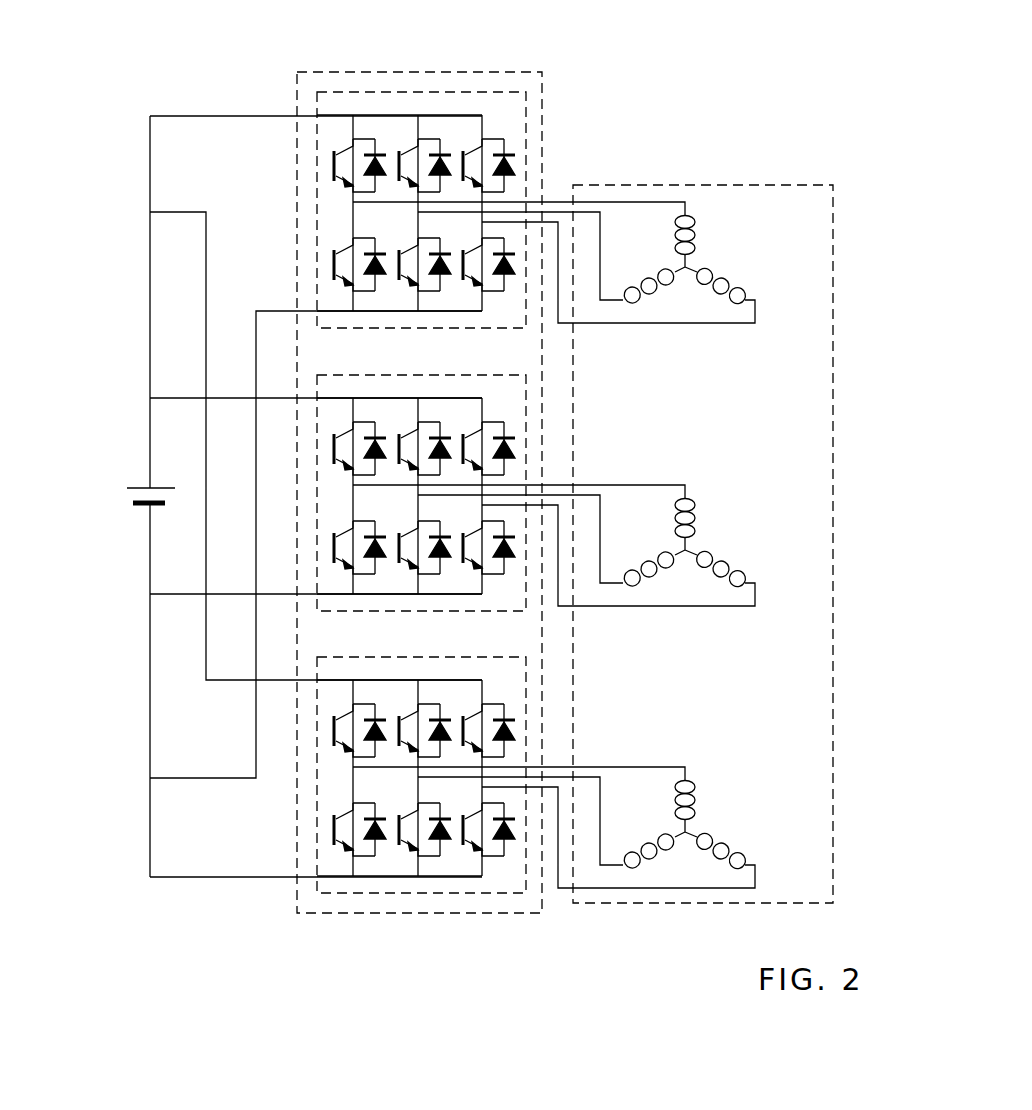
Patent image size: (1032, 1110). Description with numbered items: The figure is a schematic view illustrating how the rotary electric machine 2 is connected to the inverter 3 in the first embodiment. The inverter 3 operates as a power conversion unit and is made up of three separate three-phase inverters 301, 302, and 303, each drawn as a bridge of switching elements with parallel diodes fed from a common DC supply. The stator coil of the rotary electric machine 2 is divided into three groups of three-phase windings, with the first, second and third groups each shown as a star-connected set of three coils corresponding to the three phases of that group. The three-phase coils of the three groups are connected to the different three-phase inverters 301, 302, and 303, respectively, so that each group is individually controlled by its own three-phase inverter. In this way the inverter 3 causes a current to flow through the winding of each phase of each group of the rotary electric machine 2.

The rotary electric machine 2 is at (834, 480).
The inverter 3 is at (469, 71).
The three-phase inverter 301 is at (316, 182).
The three-phase inverter 302 is at (316, 452).
The three-phase inverter 303 is at (316, 725).